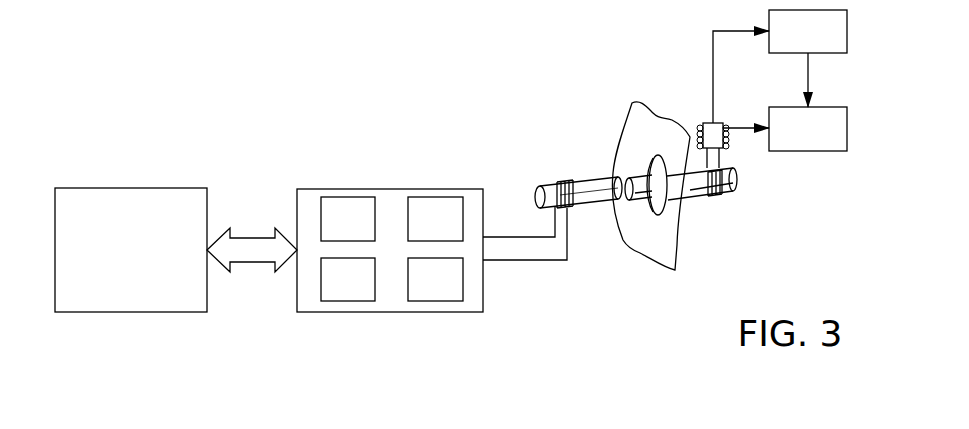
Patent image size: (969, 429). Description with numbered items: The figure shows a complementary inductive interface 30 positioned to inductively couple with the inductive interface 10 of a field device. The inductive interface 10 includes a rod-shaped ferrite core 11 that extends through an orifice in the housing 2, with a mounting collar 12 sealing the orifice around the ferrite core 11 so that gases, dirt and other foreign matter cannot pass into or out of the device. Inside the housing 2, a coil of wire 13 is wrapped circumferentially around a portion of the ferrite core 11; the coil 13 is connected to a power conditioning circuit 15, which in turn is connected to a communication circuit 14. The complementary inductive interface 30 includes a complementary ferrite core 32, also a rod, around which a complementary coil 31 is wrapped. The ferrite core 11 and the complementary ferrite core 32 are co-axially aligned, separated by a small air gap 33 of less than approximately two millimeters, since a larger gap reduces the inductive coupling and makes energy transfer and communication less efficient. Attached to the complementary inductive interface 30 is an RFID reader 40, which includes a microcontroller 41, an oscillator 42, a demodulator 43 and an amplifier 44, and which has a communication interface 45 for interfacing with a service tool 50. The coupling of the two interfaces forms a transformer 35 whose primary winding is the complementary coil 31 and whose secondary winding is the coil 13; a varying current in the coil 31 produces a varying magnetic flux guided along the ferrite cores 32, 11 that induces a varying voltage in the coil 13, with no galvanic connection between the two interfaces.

The housing 2 is at (667, 142).
The inductive interface 10 is at (665, 203).
The ferrite core 11 is at (642, 187).
The mounting collar 12 is at (660, 207).
The coil of wire 13 is at (718, 190).
The communication circuit 14 is at (772, 137).
The power conditioning circuit 15 is at (780, 66).
The complementary inductive interface 30 is at (571, 185).
The complementary coil 31 is at (557, 185).
The complementary ferrite core 32 is at (593, 190).
The air gap 33 is at (620, 177).
The transformer 35 is at (569, 100).
The RFID reader 40 is at (381, 205).
The microcontroller 41 is at (348, 219).
The oscillator 42 is at (435, 219).
The demodulator 43 is at (435, 279).
The amplifier 44 is at (348, 279).
The communication interface 45 is at (250, 245).
The service tool 50 is at (131, 250).